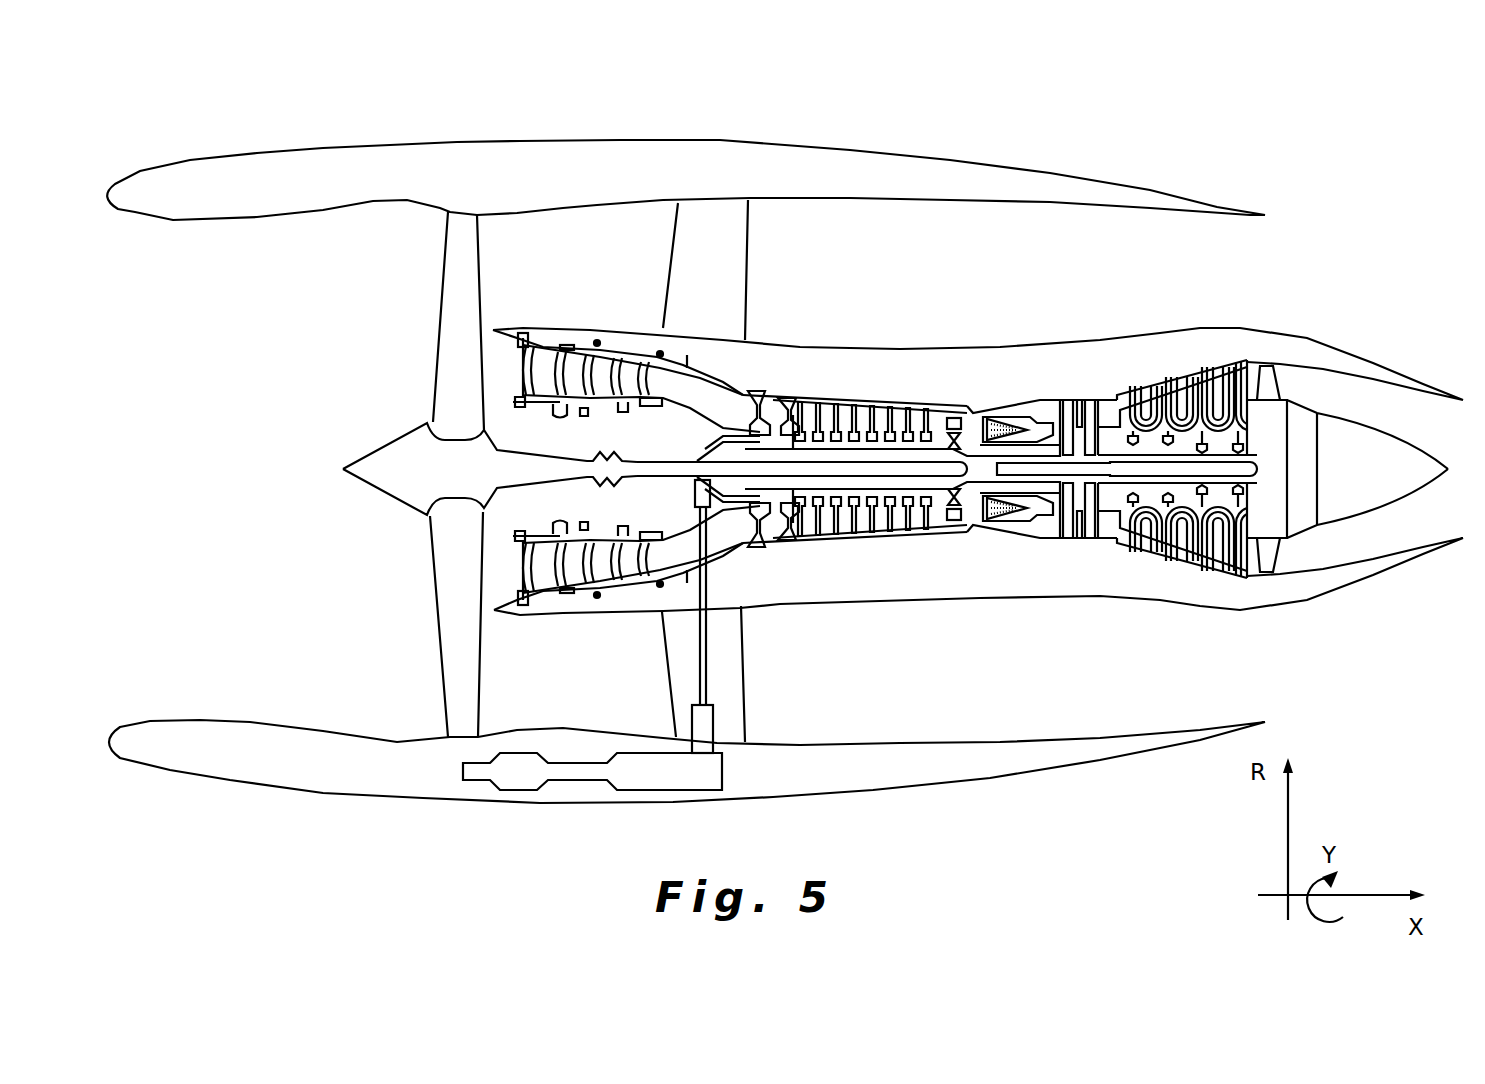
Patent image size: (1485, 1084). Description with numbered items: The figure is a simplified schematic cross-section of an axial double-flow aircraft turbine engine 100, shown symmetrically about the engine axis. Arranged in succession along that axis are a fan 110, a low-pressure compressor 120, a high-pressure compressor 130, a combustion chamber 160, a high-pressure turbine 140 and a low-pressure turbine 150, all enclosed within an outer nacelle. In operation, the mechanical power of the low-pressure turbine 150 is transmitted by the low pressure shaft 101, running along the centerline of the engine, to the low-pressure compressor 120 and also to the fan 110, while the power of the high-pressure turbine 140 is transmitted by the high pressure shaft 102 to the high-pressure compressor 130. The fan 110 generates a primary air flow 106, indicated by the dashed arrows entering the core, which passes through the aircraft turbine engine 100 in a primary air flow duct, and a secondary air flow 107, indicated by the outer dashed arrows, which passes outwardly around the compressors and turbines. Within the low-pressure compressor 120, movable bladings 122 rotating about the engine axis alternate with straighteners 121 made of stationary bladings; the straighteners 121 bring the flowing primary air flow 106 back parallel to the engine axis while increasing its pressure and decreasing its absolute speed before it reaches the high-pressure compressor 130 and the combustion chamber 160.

The aircraft turbine engine 100 is at (1362, 262).
The low pressure shaft 101 is at (643, 468).
The high pressure shaft 102 is at (953, 459).
The primary air flow 106 is at (488, 367).
The secondary air flow 107 is at (590, 251).
The fan 110 is at (455, 323).
The low-pressure compressor 120 is at (601, 594).
The straighteners 121 is at (655, 575).
The movable bladings 122 is at (613, 540).
The high-pressure compressor 130 is at (860, 563).
The high-pressure turbine 140 is at (1078, 393).
The low-pressure turbine 150 is at (1237, 338).
The combustion chamber 160 is at (1022, 422).